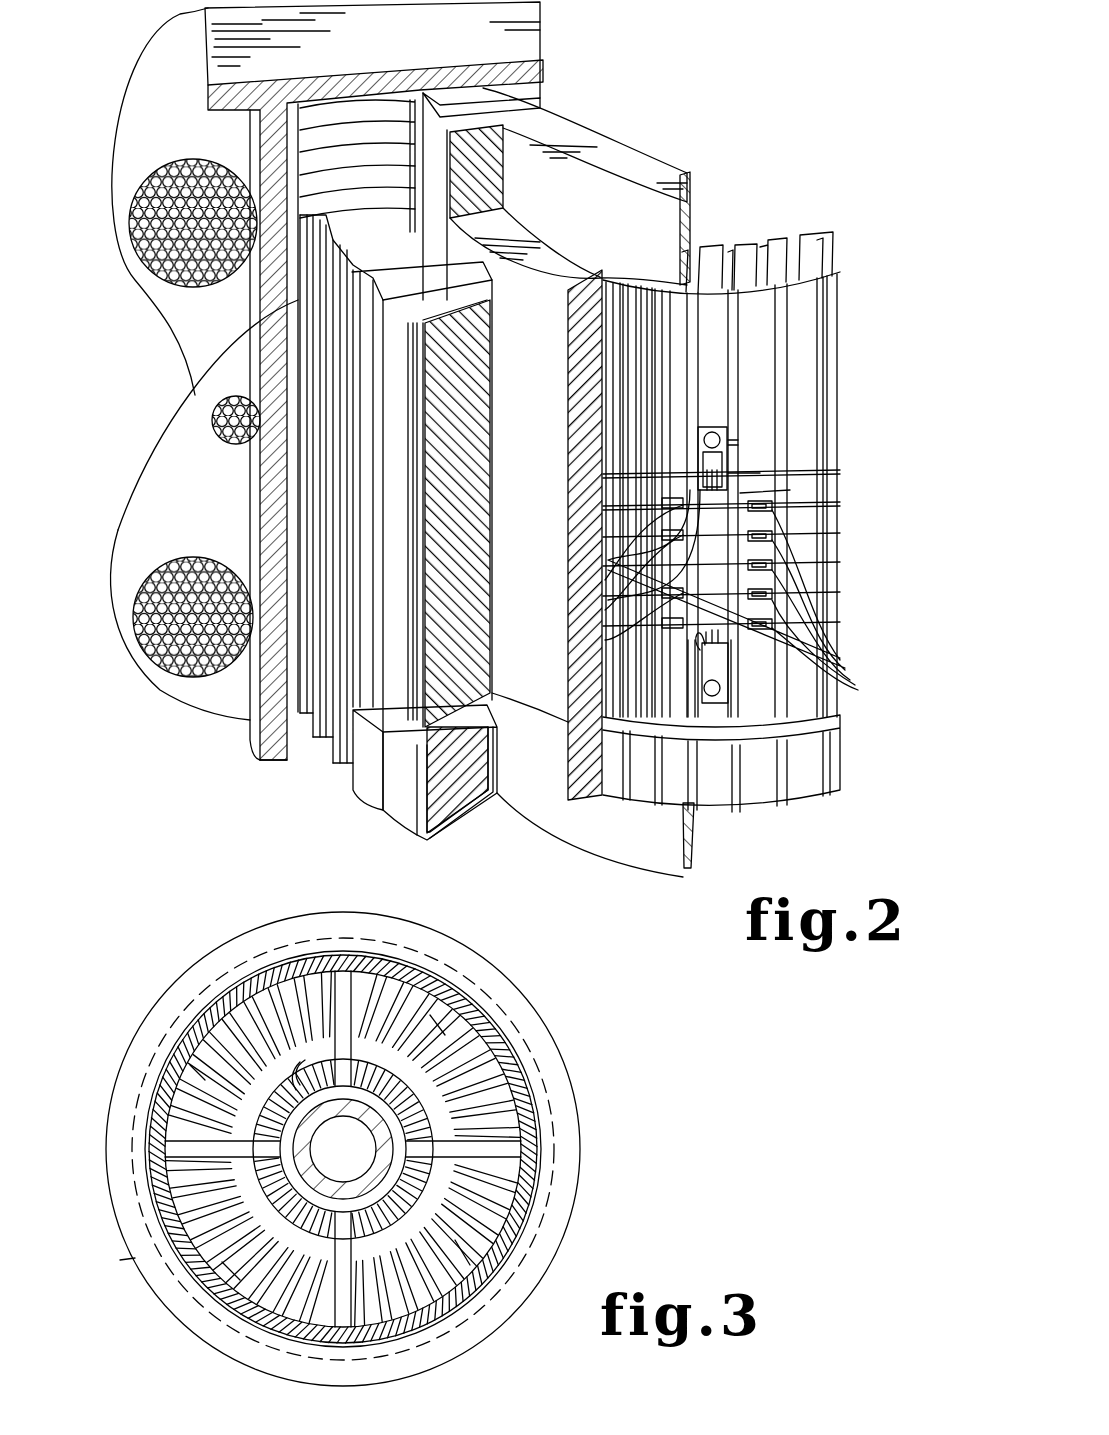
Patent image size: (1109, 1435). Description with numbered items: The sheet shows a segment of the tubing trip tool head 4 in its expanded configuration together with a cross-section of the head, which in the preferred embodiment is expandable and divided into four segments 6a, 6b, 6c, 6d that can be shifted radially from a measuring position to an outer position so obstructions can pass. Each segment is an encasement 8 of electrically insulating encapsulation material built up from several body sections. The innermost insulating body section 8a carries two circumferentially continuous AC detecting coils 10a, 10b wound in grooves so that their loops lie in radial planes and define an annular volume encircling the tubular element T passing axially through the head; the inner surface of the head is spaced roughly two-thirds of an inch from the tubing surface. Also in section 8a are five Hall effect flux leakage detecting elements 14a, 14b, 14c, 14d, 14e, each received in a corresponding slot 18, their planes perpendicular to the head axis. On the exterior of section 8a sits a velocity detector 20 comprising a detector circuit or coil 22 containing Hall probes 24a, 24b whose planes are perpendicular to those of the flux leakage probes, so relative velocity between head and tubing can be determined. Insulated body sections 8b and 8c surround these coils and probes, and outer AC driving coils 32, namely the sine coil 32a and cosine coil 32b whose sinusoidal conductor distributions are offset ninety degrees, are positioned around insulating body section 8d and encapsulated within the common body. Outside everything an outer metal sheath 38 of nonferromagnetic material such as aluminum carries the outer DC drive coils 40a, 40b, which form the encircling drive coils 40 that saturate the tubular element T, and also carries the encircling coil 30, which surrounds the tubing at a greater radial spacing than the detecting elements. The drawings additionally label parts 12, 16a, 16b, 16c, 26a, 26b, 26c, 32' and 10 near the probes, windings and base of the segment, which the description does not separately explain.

In FIG. 2, the tubing trip tool head 4 is at (655, 137).
In FIG. 2, the encasement 8 is at (832, 272).
In FIG. 3, the encasement 8 is at (410, 1214).
In FIG. 2, the innermost insulating body section 8a is at (715, 255).
In FIG. 2, the insulated body section 8b is at (555, 125).
In FIG. 2, the insulated body section 8c is at (538, 356).
In FIG. 2, the insulating body section 8d is at (437, 503).
In FIG. 2, the AC detecting coil 10a is at (770, 242).
In FIG. 2, the AC detecting coil 10b is at (721, 609).
In FIG. 2, the bottom ring 12 is at (828, 794).
In FIG. 2, the flux leakage detecting element 14a is at (772, 506).
In FIG. 2, the flux leakage detecting element 14b is at (772, 538).
In FIG. 2, the flux leakage detecting element 14c is at (772, 566).
In FIG. 2, the flux leakage detecting element 14d is at (772, 595).
In FIG. 2, the flux leakage detecting element 14e is at (772, 625).
In FIG. 2, the sensor 16a is at (662, 505).
In FIG. 2, the sensor 16b is at (662, 535).
In FIG. 2, the sensor 16c is at (672, 590).
In FIG. 2, the slot 18 is at (763, 487).
In FIG. 2, the velocity detector 20 is at (737, 447).
In FIG. 2, the detector circuit or coil 22 is at (737, 473).
In FIG. 2, the Hall probe 24a is at (712, 427).
In FIG. 2, the Hall probe 24b is at (714, 705).
In FIG. 2, the lead 26a is at (703, 657).
In FIG. 2, the lead 26b is at (706, 652).
In FIG. 2, the lead 26c is at (732, 657).
In FIG. 2, the encircling coil 30 is at (205, 375).
In FIG. 3, the encircling coil 30 is at (113, 1259).
In FIG. 3, the AC driving coils 32 is at (376, 1149).
In FIG. 2, the AC driving coil (sine coil) 32a is at (355, 135).
In FIG. 2, the AC driving coil (cosine coil) 32b is at (372, 155).
In FIG. 2, the winding end cap 32' is at (438, 780).
In FIG. 2, the outer metal sheath 38 is at (268, 334).
In FIG. 3, the outer metal sheath 38 is at (262, 972).
In FIG. 3, the encircling drive coils 40 is at (562, 1084).
In FIG. 2, the outer DC drive coil 40a is at (130, 147).
In FIG. 2, the outer DC drive coil 40b is at (150, 565).
In FIG. 3, the segment 6a is at (436, 1030).
In FIG. 3, the segment 6b is at (462, 1248).
In FIG. 3, the segment 6c is at (244, 1260).
In FIG. 3, the segment 6d is at (196, 1080).
In FIG. 3, the pole 10 is at (311, 1063).
In FIG. 3, the tubular element T is at (380, 1152).